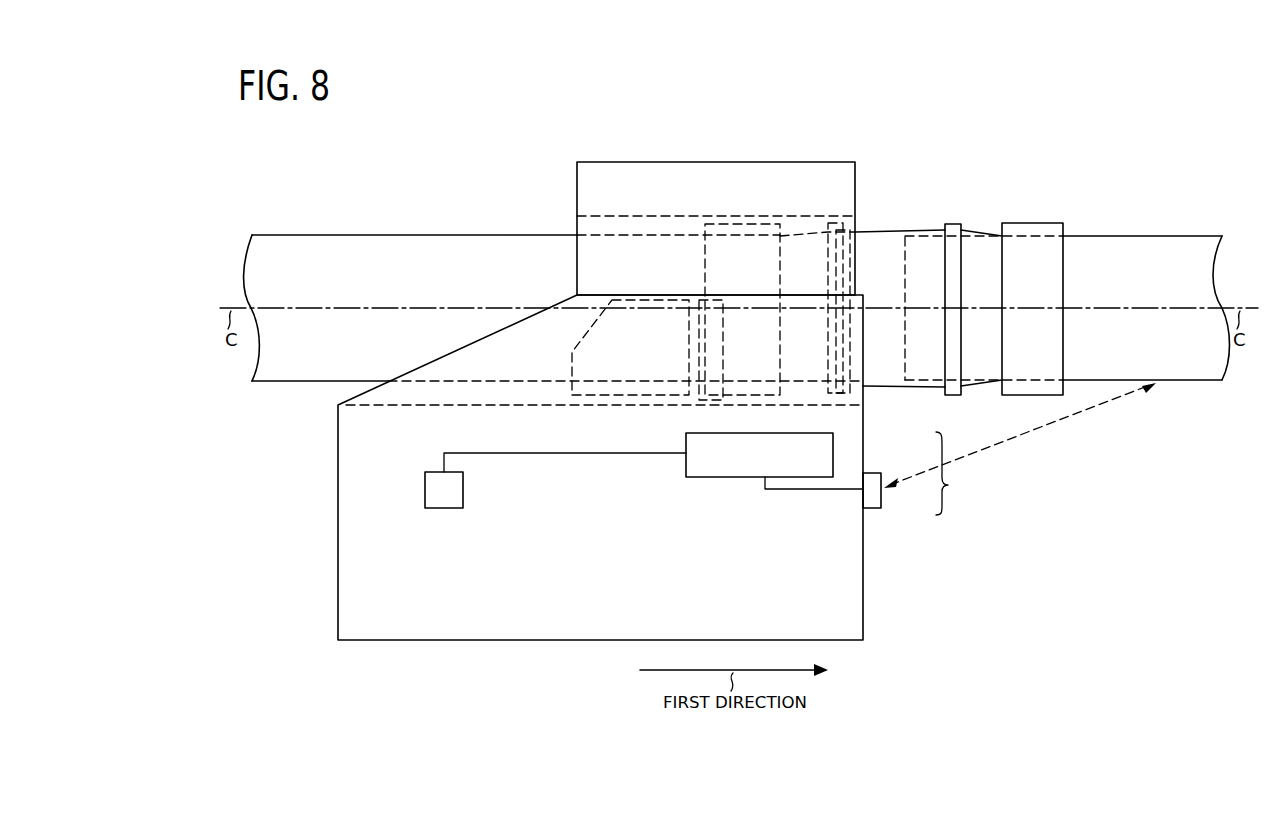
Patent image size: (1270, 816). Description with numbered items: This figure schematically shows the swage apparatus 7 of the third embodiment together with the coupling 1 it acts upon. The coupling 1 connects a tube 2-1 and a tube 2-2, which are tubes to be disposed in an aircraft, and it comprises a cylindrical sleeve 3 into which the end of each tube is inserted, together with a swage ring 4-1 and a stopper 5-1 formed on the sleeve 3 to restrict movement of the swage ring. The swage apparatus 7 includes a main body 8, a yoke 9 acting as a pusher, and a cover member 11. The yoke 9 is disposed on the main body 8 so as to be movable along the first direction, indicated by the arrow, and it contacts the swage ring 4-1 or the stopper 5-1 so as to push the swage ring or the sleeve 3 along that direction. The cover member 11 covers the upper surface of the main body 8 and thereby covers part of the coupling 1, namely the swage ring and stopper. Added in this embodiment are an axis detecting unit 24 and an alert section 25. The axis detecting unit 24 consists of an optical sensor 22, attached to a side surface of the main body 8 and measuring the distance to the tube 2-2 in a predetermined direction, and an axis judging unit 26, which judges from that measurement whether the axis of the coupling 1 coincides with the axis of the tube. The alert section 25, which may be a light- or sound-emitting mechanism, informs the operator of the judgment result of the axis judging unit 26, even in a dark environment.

The coupling 1 is at (950, 204).
The tube 2-1 is at (400, 234).
The tube 2-2 is at (1157, 240).
The sleeve 3 is at (890, 230).
The swage ring 4-1 is at (705, 255).
The stopper 5-1 is at (845, 363).
The swage apparatus 7 is at (872, 145).
The main body 8 is at (863, 545).
The yoke 9 is at (592, 330).
The cover member 11 is at (750, 162).
The optical sensor 22 is at (881, 497).
The axis detecting unit 24 is at (957, 473).
The alert section 25 is at (425, 492).
The axis judging unit 26 is at (833, 455).